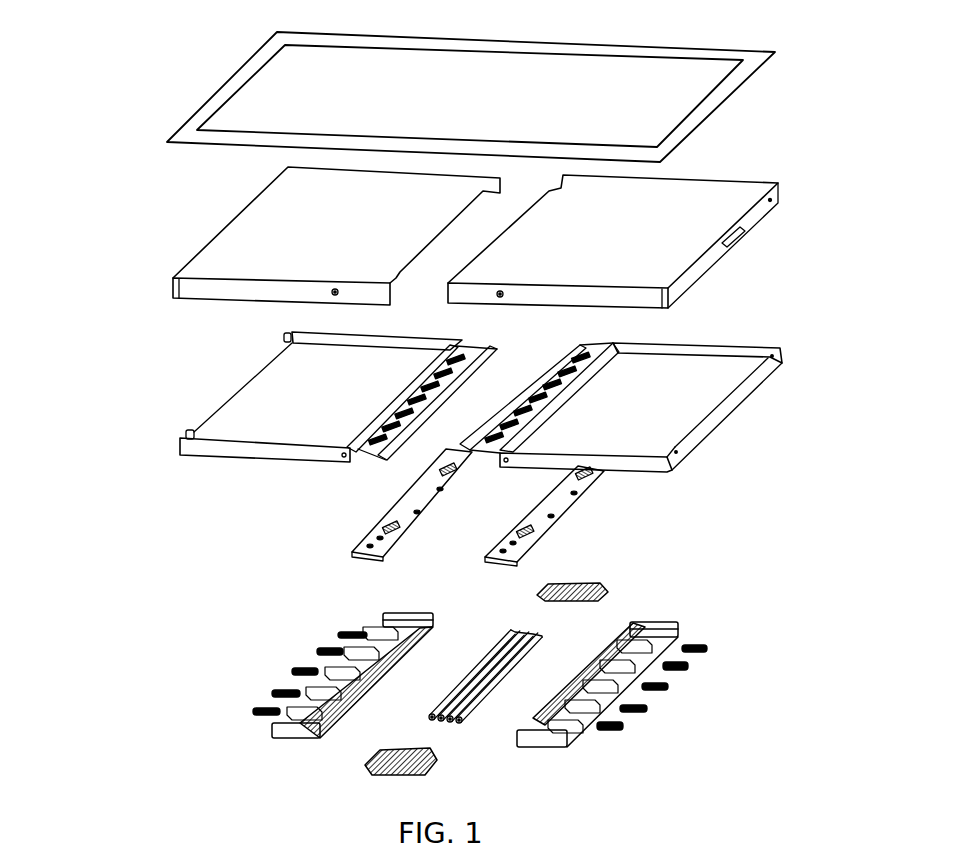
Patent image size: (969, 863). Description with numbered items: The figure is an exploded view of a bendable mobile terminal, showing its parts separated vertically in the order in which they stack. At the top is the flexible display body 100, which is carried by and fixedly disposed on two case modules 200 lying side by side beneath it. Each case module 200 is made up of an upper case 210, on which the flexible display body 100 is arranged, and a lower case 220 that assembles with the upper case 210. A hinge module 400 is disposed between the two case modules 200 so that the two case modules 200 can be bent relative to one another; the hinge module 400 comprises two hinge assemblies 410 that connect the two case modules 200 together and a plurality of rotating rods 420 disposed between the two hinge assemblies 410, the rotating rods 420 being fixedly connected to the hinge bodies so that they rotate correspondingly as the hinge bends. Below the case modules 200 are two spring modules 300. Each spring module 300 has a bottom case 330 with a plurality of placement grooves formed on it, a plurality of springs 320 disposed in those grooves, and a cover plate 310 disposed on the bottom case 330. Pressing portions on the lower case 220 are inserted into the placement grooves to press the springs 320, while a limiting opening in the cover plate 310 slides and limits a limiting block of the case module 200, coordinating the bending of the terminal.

The flexible display body 100 is at (288, 72).
The case module 200 is at (108, 213).
The upper case 210 is at (263, 227).
The lower case 220 is at (288, 373).
The spring module 300 is at (125, 533).
The cover plate 310 is at (367, 540).
The spring 320 is at (338, 634).
The bottom case 330 is at (272, 730).
The hinge module 400 is at (767, 535).
The hinge assembly 410 is at (610, 587).
The rotating rod 420 is at (552, 635).